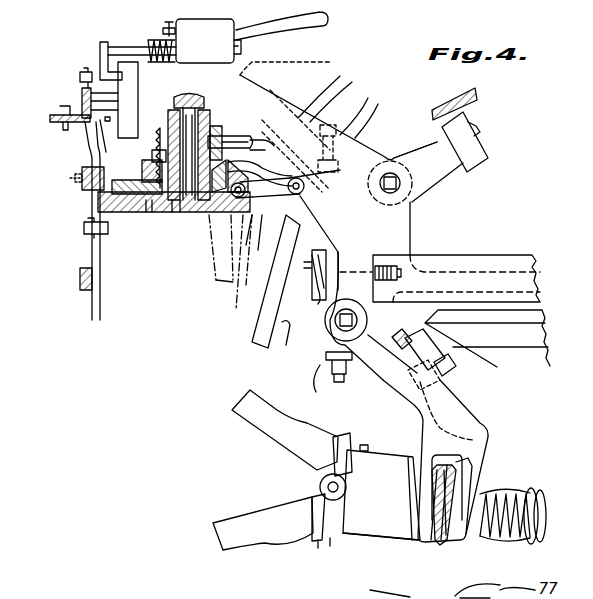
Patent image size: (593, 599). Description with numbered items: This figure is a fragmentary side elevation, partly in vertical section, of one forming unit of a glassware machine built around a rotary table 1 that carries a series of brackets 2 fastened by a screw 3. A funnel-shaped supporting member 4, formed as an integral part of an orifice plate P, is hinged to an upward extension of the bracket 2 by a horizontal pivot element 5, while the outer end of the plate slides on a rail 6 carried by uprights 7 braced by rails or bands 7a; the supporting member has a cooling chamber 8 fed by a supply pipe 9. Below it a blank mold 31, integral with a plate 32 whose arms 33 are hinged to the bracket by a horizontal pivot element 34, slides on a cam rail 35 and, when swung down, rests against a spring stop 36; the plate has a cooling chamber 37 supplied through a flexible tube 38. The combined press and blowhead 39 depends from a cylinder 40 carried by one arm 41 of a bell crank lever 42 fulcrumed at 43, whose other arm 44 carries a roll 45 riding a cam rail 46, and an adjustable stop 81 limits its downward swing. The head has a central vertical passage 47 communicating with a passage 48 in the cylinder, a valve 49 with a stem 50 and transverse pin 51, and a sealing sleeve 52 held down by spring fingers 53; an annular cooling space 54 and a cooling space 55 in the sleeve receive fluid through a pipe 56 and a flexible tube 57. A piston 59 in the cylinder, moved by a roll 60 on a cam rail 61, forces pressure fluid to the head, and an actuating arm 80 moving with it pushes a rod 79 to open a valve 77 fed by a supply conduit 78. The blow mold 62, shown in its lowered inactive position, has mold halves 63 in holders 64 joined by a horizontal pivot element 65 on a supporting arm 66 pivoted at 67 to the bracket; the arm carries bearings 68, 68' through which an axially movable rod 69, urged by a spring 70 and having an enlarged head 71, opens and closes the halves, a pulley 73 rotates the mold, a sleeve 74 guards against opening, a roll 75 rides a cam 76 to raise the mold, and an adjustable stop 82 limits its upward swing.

The rotary table 1 is at (494, 258).
The bracket 2 is at (375, 242).
The screw 3 is at (316, 286).
The funnel-shaped supporting member 4 is at (130, 175).
The horizontal pivot element 5 is at (240, 174).
The rail 6 is at (105, 207).
The upright 7 is at (99, 305).
The rails or bands 7a is at (80, 180).
The cooling chamber 8 is at (128, 212).
The supply pipe 9 is at (270, 180).
The orifice plate P is at (105, 195).
The blank mold 31 is at (174, 215).
The plate 32 is at (148, 215).
The arms 33 is at (255, 242).
The horizontal pivot element 34 is at (300, 193).
The cam rail 35 is at (122, 215).
The spring stop 36 is at (290, 328).
The cooling chamber 37 is at (180, 212).
The flexible tube 38 is at (370, 130).
The combined press and blowhead 39 is at (155, 212).
The cylinder 40 is at (242, 72).
The arm 41 is at (302, 104).
The bell crank lever 42 is at (412, 205).
The fulcrum 43 is at (400, 183).
The arm 44 is at (437, 138).
The roll 45 is at (482, 160).
The cam rail 46 is at (452, 98).
The central vertical passage 47 is at (238, 136).
The passage 48 is at (206, 128).
The valve 49 is at (190, 210).
The stem 50 is at (215, 206).
The transverse pin 51 is at (200, 125).
The sealing sleeve 52 is at (157, 165).
The spring fingers 53 is at (262, 133).
The annular cooling space 54 is at (150, 150).
The annular cooling space 55 is at (142, 170).
The pipe 56 is at (336, 88).
The flexible tube 57 is at (160, 126).
The piston 59 is at (183, 108).
The roll 60 is at (84, 94).
The cam rail 61 is at (82, 98).
The blow mold 62 is at (360, 441).
The mold halves or sections 63 is at (250, 518).
The holders 64 is at (338, 436).
The horizontal pivot element 65 is at (320, 488).
The supporting arm 66 is at (446, 402).
The pivot element 67 is at (336, 322).
The bearing 68 is at (437, 513).
The bearing 68' is at (474, 513).
The axially movable rod 69 is at (496, 492).
The spring 70 is at (512, 545).
The enlarged head 71 is at (546, 508).
The pulley 73 is at (442, 545).
The sleeve 74 is at (384, 540).
The roll 75 is at (447, 352).
The cam 76 is at (422, 328).
The valve 77 is at (216, 30).
The pressure fluid supply conduit 78 is at (316, 34).
The rod 79 is at (125, 48).
The actuating arm 80 is at (106, 48).
The adjustable stop 81 is at (330, 186).
The adjustable stop 82 is at (312, 364).